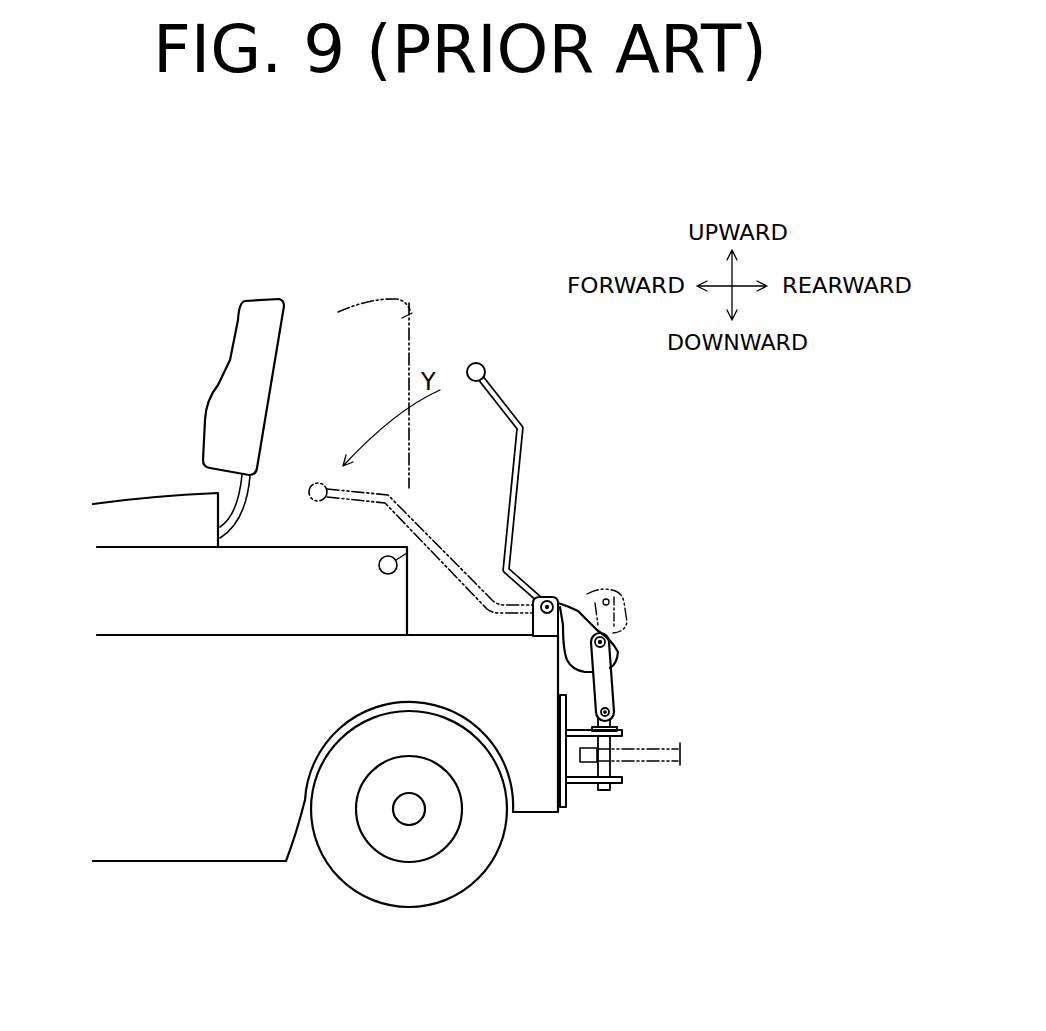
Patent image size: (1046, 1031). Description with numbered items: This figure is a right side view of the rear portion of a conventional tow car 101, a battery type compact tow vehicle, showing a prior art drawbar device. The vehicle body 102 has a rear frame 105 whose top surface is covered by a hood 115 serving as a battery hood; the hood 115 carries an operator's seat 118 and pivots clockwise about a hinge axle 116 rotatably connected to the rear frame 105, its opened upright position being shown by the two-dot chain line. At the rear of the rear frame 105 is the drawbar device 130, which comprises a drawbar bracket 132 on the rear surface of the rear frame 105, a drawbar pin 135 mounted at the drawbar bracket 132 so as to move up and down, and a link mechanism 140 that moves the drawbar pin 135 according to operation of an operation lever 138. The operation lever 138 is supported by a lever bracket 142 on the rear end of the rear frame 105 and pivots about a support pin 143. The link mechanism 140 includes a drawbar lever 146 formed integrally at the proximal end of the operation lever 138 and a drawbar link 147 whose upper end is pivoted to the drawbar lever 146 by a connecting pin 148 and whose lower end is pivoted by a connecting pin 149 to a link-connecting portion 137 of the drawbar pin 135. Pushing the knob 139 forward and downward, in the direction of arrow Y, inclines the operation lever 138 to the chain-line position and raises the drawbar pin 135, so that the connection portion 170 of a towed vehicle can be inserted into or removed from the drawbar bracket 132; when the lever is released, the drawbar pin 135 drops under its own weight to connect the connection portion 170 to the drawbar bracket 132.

The tow car 101 is at (113, 393).
The vehicle body 102 is at (104, 873).
The rear frame 105 is at (245, 845).
The hood 115 is at (413, 312).
The hinge axle 116 is at (416, 545).
The operator's seat 118 is at (254, 287).
The drawbar device 130 is at (642, 554).
The drawbar bracket 132 is at (570, 795).
The drawbar pin 135 is at (604, 793).
The link-connecting portion 137 is at (620, 722).
The operation lever 138 is at (518, 467).
The knob 139 is at (484, 364).
The link mechanism 140 is at (642, 662).
The lever bracket 142 is at (547, 598).
The support pin 143 is at (553, 600).
The drawbar lever 146 is at (587, 594).
The drawbar link 147 is at (620, 588).
The connecting pin 148 is at (617, 638).
The connecting pin 149 is at (612, 710).
The connection portion 170 is at (668, 763).